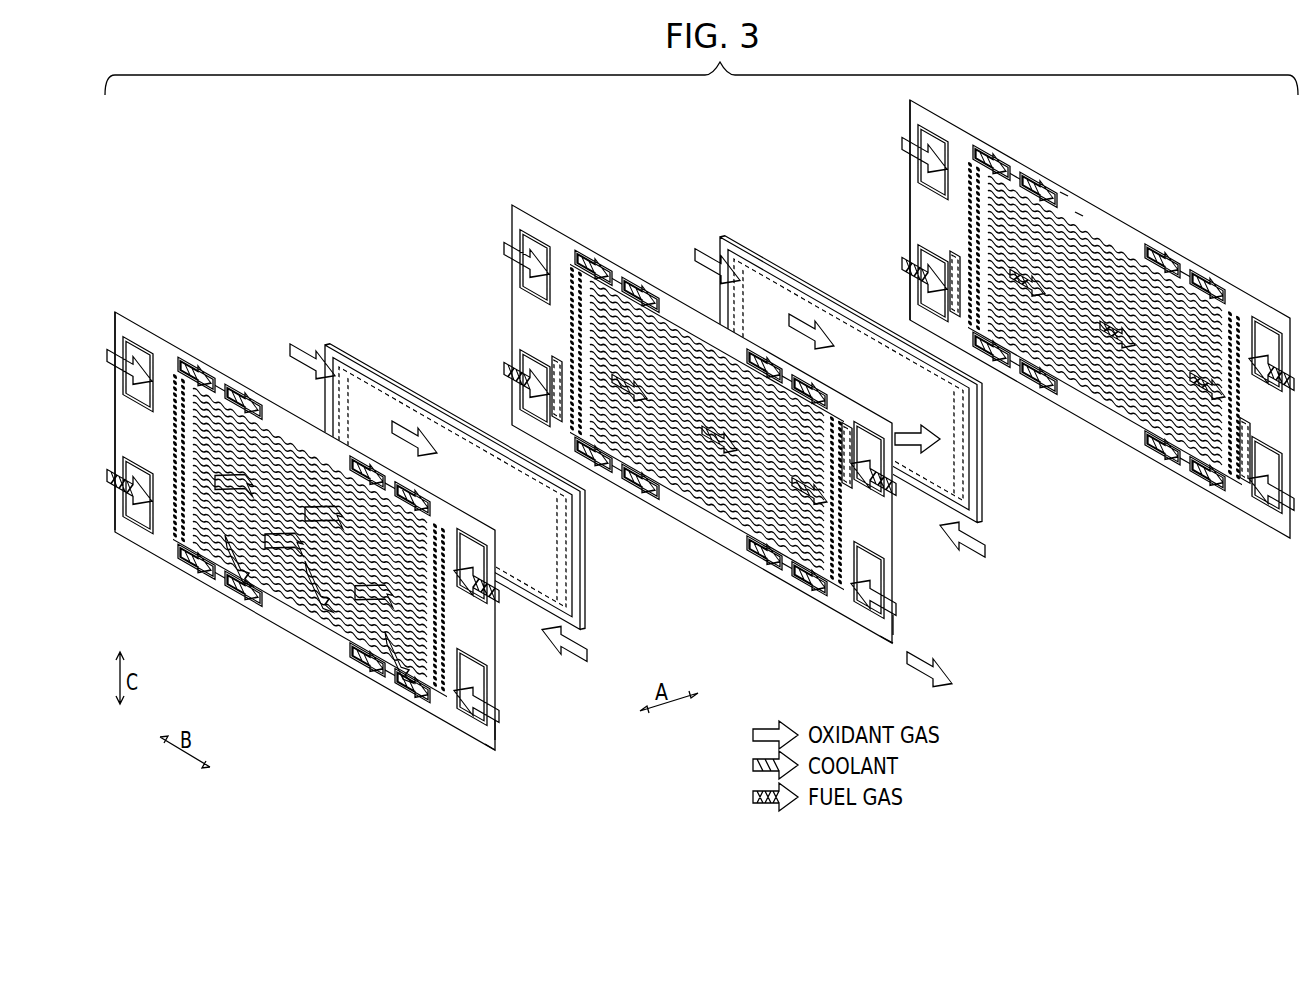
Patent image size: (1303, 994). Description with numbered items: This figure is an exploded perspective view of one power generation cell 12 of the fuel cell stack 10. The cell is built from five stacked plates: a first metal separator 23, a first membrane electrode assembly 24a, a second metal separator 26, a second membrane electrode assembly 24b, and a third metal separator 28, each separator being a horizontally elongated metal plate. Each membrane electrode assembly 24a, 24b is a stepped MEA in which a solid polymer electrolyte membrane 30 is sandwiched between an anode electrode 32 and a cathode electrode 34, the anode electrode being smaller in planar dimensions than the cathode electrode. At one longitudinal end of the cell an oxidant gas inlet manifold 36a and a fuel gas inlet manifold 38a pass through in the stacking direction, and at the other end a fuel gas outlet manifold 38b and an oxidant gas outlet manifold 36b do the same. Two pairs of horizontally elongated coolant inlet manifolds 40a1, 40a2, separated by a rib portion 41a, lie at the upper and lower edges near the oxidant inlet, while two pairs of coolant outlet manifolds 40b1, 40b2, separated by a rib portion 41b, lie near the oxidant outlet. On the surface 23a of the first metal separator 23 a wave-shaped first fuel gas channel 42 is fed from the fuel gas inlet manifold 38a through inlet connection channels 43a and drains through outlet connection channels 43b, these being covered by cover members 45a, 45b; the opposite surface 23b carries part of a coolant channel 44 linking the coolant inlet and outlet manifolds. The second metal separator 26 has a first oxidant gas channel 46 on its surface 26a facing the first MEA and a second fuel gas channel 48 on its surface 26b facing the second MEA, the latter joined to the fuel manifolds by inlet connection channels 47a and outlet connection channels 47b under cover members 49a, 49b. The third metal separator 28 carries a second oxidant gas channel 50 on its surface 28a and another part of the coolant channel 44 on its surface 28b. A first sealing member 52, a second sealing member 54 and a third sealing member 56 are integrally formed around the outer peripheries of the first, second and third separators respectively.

The fuel cell stack 10 is at (292, 218).
The power generation cell 12 is at (254, 216).
The first metal separator 23 is at (899, 117).
The surface of the first metal separator 23a is at (1068, 195).
The surface of the first metal separator 23b is at (1080, 214).
The first membrane electrode assembly 24a is at (718, 229).
The second membrane electrode assembly 24b is at (321, 334).
The second metal separator 26 is at (504, 196).
The surface of the second metal separator 26a is at (896, 628).
The surface of the second metal separator 26b is at (888, 640).
The third metal separator 28 is at (122, 303).
The surface of the third metal separator 28a is at (497, 734).
The surface of the third metal separator 28b is at (493, 746).
The solid polymer electrolyte membrane 30 is at (368, 372).
The anode electrode 32 is at (528, 598).
The cathode electrode 34 is at (340, 368).
The oxidant gas inlet manifold 36a is at (928, 148).
The oxidant gas outlet manifold 36b is at (475, 703).
The fuel gas inlet manifold 38a is at (140, 540).
The fuel gas outlet manifold 38b is at (1282, 195).
The coolant inlet manifold 40a1 is at (190, 372).
The coolant inlet manifold 40a2 is at (242, 400).
The coolant outlet manifold 40b1 is at (360, 465).
The coolant outlet manifold 40b2 is at (432, 500).
The rib portion 41a is at (222, 390).
The rib portion 41b is at (390, 490).
The first fuel gas channel 42 is at (1068, 370).
The inlet connection channels 43a is at (940, 235).
The outlet connection channels 43b is at (1235, 320).
The coolant channel 44 is at (278, 570).
The cover member 45a is at (940, 310).
The cover member 45b is at (1250, 330).
The first oxidant gas channel 46 is at (690, 470).
The inlet connection channels 47a is at (535, 350).
The outlet connection channels 47b is at (840, 440).
The second fuel gas channel 48 is at (673, 465).
The cover member 49a is at (540, 423).
The cover member 49b is at (860, 455).
The second oxidant gas channel 50 is at (292, 575).
The first sealing member 52 is at (1125, 420).
The second sealing member 54 is at (730, 520).
The third sealing member 56 is at (338, 625).